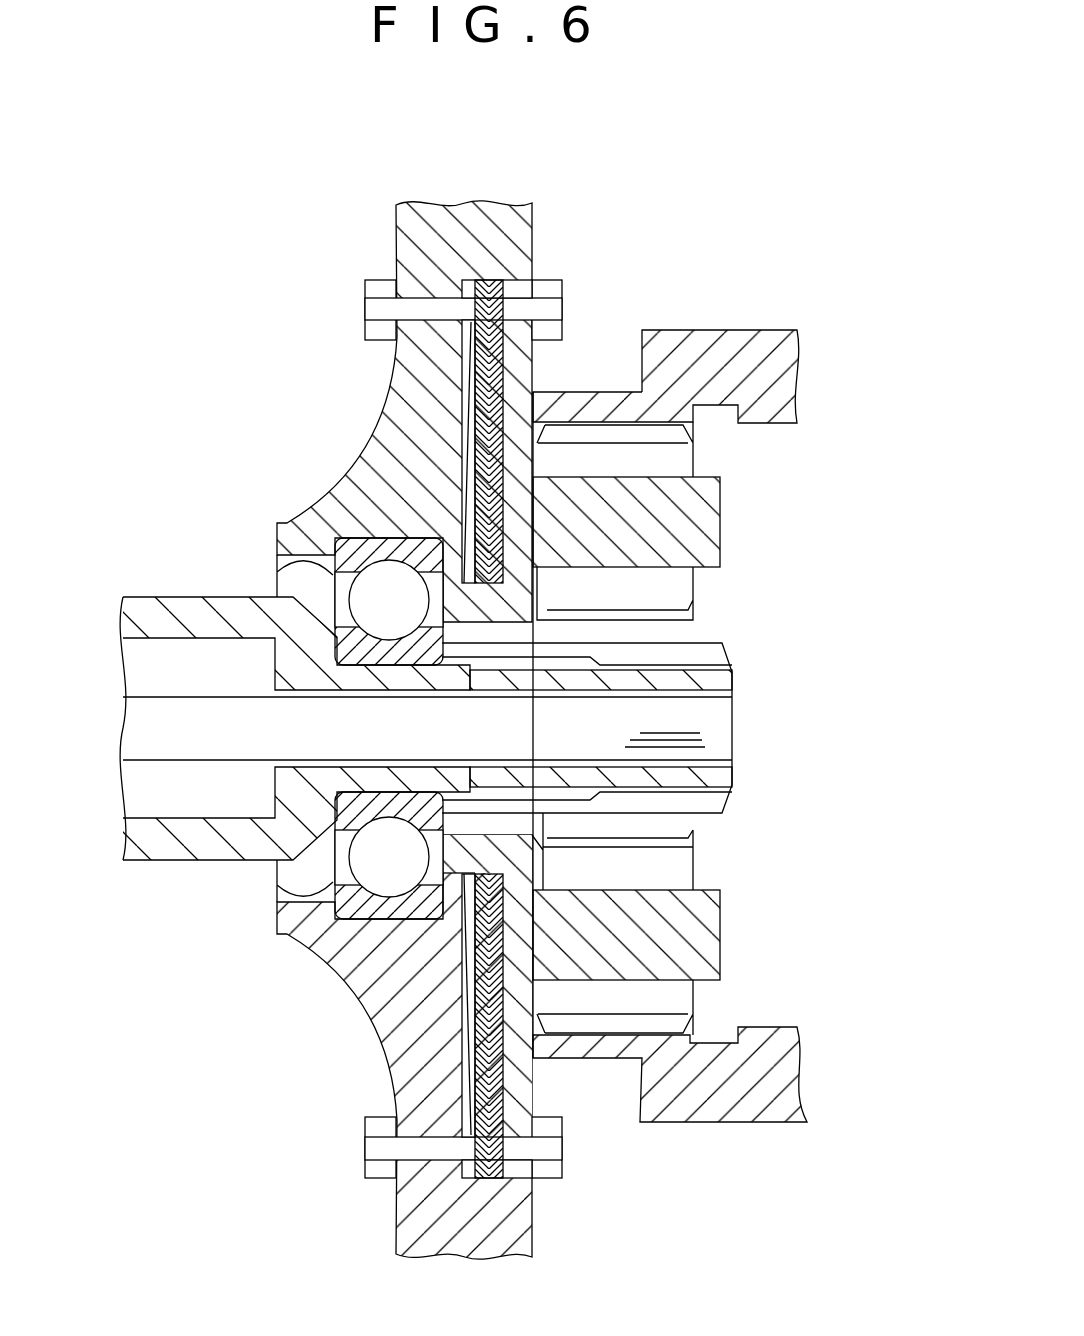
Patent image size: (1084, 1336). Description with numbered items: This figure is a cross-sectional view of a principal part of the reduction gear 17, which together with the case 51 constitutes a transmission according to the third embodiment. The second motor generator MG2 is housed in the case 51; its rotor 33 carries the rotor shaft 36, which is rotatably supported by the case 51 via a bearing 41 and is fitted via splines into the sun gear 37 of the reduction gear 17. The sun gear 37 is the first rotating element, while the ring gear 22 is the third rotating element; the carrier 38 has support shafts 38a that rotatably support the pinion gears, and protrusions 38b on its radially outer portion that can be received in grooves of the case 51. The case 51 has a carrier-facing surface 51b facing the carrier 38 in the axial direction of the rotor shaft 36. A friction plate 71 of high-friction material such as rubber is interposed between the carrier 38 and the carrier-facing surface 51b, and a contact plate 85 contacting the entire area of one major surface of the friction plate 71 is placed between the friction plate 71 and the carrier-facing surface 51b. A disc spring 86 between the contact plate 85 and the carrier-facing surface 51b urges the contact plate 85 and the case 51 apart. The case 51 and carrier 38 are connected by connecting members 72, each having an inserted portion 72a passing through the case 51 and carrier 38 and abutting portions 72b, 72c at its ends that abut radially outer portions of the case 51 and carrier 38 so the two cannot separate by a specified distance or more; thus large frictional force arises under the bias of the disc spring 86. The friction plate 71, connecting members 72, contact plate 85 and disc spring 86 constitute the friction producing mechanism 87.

The reduction gear 17 is at (745, 708).
The ring gear 22 is at (797, 350).
The rotor 33 is at (295, 698).
The rotor shaft 36 is at (733, 688).
The sun gear 37 is at (683, 634).
The carrier 38 is at (558, 384).
The support shaft 38a is at (720, 527).
The protrusion 38b is at (517, 280).
The bearing 41 is at (277, 581).
The case 51 is at (345, 432).
The carrier-facing surface 51b is at (505, 1120).
The friction plate 71 is at (507, 1078).
The connecting member 72 is at (358, 1188).
The inserted portion 72a is at (447, 305).
The abutting portion 72b is at (550, 308).
The abutting portion 72c is at (378, 310).
The contact plate 85 is at (475, 452).
The disc spring 86 is at (460, 380).
The friction producing mechanism 87 is at (455, 1040).
The second motor generator MG2 is at (257, 681).